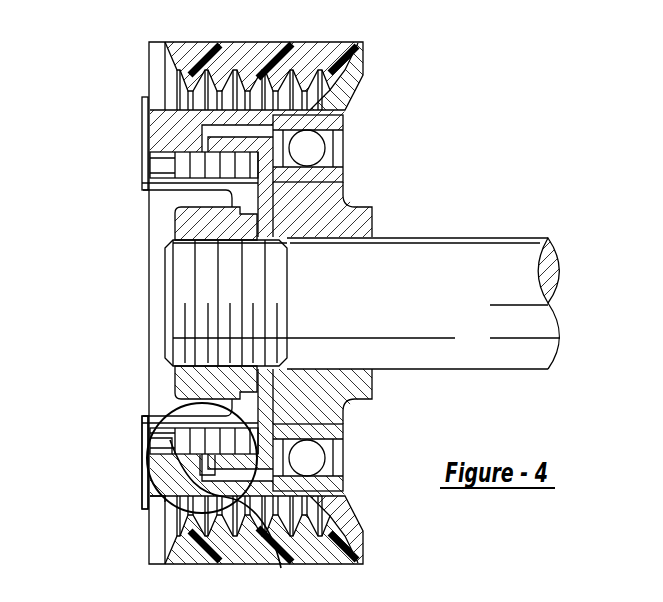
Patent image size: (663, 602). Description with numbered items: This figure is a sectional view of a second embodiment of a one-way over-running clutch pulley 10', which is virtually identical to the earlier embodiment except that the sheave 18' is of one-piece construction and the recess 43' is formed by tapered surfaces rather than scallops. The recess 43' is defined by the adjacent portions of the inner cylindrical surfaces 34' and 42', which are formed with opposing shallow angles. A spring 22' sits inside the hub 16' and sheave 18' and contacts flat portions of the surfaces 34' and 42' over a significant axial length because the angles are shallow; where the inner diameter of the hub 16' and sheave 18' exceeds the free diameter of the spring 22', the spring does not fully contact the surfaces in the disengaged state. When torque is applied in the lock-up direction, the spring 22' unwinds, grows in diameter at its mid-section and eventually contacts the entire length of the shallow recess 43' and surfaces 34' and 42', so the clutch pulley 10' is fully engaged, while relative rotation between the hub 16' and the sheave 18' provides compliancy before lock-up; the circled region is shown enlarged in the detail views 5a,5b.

The one-way over-running clutch pulley 10' is at (301, 301).
The sheave 18' is at (218, 301).
The spring 22' is at (167, 192).
The hub 16' is at (362, 303).
The inner cylindrical surface 34' is at (125, 436).
The inner cylindrical surface 42' is at (162, 450).
The spring end / tang 5a,5b is at (168, 473).
The recess 43' is at (140, 532).